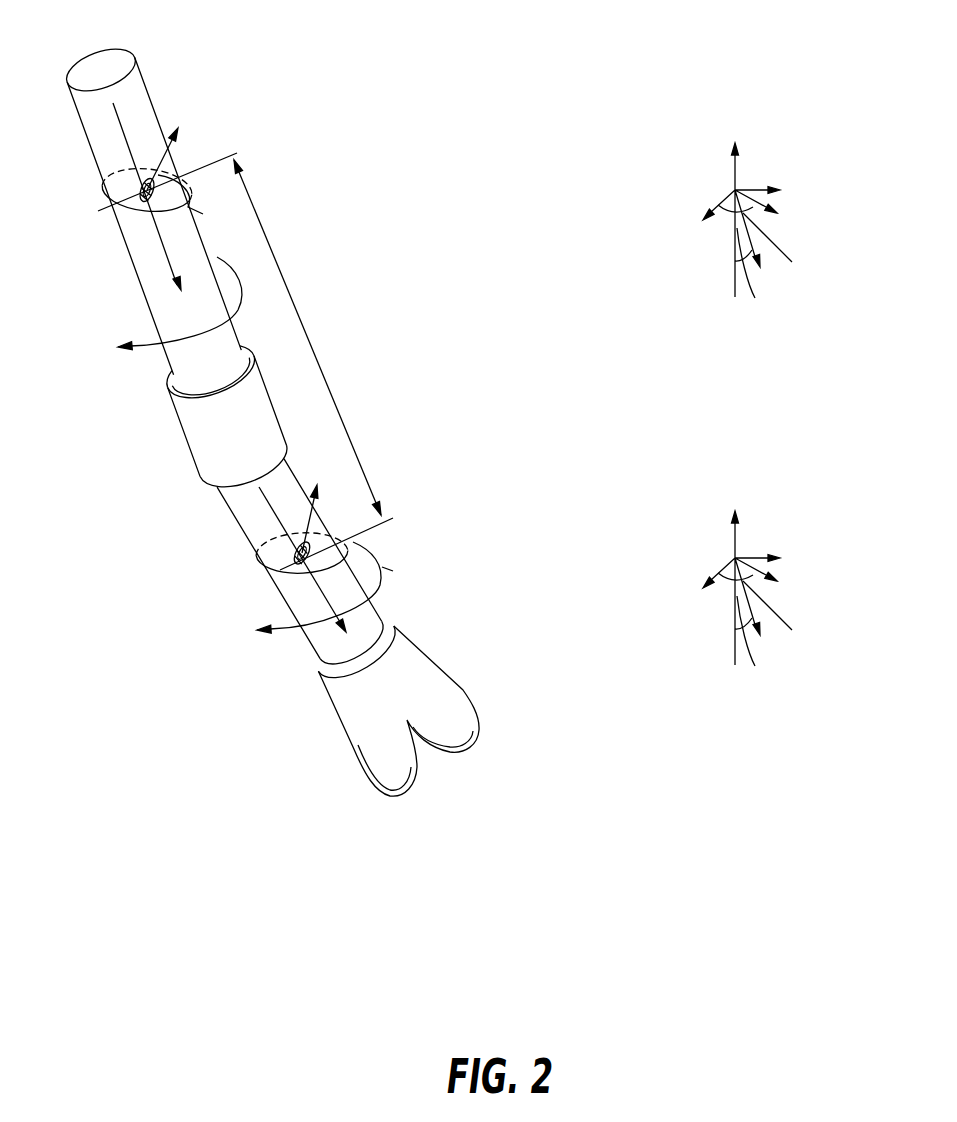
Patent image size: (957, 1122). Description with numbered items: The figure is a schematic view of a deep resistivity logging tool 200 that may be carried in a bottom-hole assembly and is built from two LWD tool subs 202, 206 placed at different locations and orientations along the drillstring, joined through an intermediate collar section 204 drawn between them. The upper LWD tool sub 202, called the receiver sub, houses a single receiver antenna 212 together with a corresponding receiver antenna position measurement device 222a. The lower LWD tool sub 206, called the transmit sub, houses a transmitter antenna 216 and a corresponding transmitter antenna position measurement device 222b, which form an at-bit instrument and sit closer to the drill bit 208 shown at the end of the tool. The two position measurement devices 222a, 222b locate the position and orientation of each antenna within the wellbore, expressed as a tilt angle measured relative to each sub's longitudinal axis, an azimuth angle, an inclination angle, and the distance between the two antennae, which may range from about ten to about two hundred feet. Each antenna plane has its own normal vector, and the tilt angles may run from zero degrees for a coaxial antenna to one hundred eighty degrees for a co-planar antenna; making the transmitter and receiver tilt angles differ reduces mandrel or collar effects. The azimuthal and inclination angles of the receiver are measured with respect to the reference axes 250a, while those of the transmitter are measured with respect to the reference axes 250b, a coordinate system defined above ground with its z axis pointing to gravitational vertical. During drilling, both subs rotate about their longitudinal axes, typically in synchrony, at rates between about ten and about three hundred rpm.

The deep resistivity logging tool 200 is at (330, 152).
The LWD tool sub 202 is at (140, 72).
The collar 204 is at (180, 420).
The LWD tool sub 206 is at (293, 472).
The drill bit 208 is at (432, 662).
The receiver antenna 212 is at (138, 201).
The transmitter antenna 216 is at (295, 566).
The receiver antenna position measurement device 222a is at (130, 214).
The transmitter antenna position measurement device 222b is at (293, 560).
The reference axes 250a is at (762, 140).
The reference axes 250b is at (783, 797).